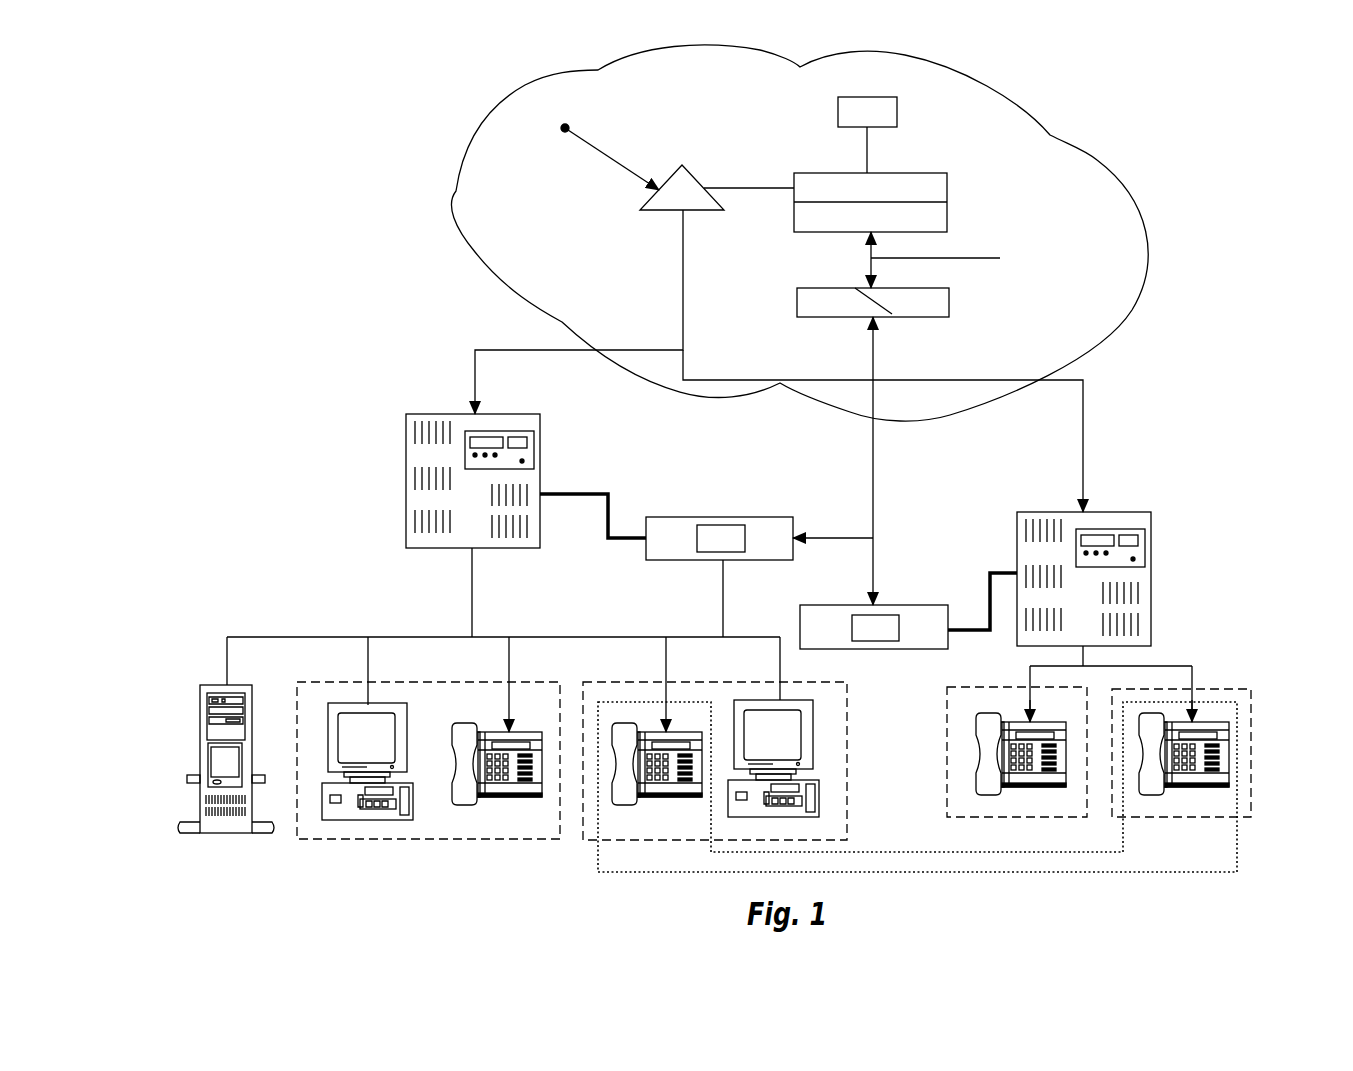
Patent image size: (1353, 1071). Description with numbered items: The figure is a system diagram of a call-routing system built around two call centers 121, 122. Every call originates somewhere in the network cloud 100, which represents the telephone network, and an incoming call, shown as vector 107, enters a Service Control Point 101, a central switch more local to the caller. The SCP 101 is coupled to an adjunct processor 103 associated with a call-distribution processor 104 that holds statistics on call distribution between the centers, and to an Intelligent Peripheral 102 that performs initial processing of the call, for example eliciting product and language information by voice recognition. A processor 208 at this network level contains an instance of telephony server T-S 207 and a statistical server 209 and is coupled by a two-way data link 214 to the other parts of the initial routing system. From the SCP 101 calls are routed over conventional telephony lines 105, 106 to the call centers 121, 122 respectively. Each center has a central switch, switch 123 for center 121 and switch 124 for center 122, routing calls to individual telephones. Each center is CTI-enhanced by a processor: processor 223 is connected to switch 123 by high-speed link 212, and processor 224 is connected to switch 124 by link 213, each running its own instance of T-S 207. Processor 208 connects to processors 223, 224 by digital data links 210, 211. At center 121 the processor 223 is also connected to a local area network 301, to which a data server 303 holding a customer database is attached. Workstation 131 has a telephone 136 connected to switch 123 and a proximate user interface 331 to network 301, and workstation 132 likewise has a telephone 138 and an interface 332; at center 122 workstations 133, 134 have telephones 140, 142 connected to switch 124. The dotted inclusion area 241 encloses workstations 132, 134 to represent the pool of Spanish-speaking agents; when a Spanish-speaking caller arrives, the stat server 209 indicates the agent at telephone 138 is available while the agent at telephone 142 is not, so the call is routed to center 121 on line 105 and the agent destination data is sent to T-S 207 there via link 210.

The network cloud 100 is at (456, 191).
The Service Control Point (SCP) 101 is at (682, 165).
The Intelligent Peripheral 102 is at (838, 112).
The adjunct processor 103 is at (947, 188).
The call-distribution processor 104 is at (947, 216).
The telephony line 105 is at (473, 380).
The telephony line 106 is at (1085, 408).
The incoming call vector 107 is at (588, 145).
The call center 121 is at (397, 458).
The call center 122 is at (1160, 587).
The central switch 123 is at (406, 444).
The central switch 124 is at (1151, 540).
The workstation 131 is at (368, 842).
The workstation 132 is at (588, 843).
The workstation 133 is at (947, 713).
The workstation 134 is at (1251, 750).
The telephone 136 is at (492, 797).
The telephone 138 is at (647, 730).
The telephone 140 is at (988, 743).
The telephone 142 is at (1220, 745).
The telephony server T-S 207 is at (812, 303).
The processor 208 is at (797, 297).
The statistical server (Stat Server) 209 is at (933, 305).
The digital data link 210 is at (842, 538).
The digital data link 211 is at (875, 577).
The link 212 is at (560, 492).
The link 213 is at (987, 587).
The two-way data link 214 is at (1000, 258).
The processor 223 is at (702, 560).
The processor 224 is at (918, 649).
The inclusion area 241 is at (1073, 875).
The local area network 301 is at (267, 633).
The data server 303 is at (200, 735).
The user interface 331 is at (345, 703).
The user interface 332 is at (815, 757).